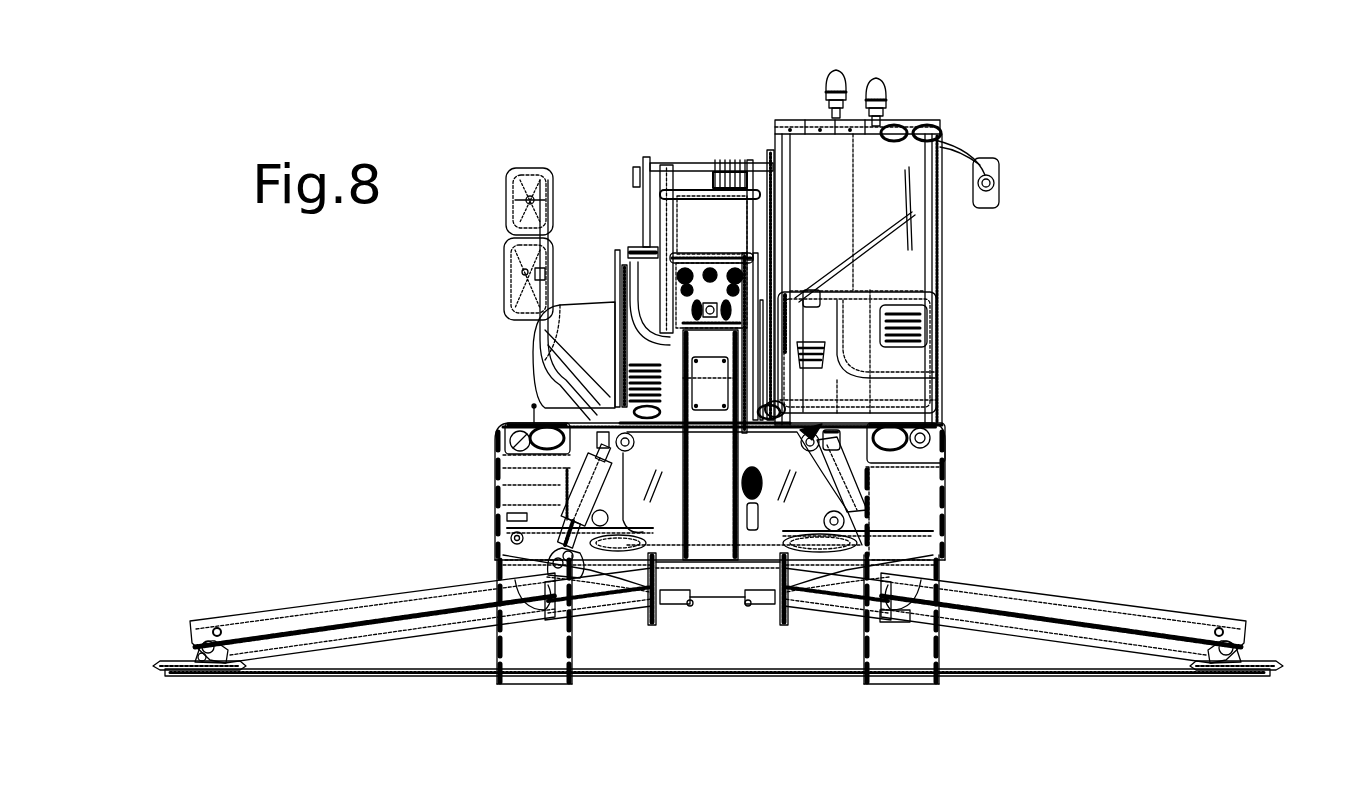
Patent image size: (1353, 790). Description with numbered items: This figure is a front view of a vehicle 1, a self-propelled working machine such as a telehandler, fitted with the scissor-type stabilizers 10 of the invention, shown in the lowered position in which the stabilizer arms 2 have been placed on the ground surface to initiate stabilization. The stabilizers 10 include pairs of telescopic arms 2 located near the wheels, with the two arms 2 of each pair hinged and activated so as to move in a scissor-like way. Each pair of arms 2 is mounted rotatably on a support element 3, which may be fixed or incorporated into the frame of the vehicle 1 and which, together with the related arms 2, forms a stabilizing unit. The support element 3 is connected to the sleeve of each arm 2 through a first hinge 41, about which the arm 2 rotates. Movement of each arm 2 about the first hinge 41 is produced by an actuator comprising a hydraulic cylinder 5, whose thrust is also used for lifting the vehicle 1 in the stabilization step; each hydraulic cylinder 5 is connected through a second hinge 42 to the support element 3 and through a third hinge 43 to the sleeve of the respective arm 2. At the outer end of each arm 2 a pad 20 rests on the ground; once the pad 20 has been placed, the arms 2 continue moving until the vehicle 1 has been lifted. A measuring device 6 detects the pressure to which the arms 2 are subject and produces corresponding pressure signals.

The vehicle 1 is at (1055, 173).
The stabilizer arms 2 is at (242, 580).
The support element 3 is at (862, 441).
The hydraulic cylinder 5 is at (587, 505).
The measuring device 6 is at (615, 438).
The stabilizers 10 is at (422, 490).
The pad 20 is at (195, 656).
The first hinge 41 is at (510, 427).
The second hinge 42 is at (825, 424).
The third hinge 43 is at (526, 558).